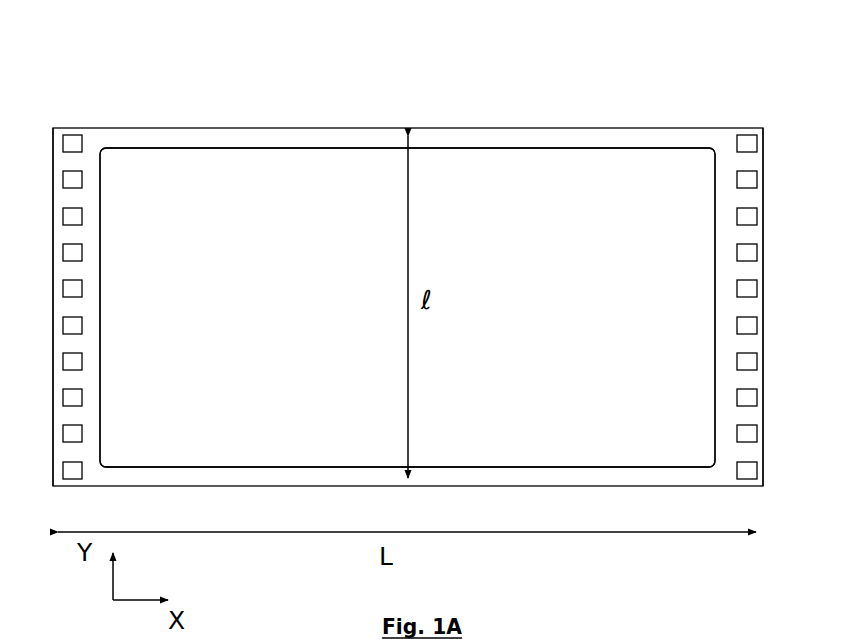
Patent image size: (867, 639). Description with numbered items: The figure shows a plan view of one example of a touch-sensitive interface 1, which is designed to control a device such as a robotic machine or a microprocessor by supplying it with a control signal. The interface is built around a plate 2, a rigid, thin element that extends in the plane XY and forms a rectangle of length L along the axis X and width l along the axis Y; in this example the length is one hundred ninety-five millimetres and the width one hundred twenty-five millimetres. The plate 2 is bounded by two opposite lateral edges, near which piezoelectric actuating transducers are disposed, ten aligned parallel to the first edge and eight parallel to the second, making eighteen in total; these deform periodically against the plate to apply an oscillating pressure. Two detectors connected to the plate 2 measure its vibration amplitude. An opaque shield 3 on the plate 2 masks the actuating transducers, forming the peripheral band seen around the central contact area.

The touch-sensitive interface 1 is at (248, 100).
The plate 2 is at (248, 162).
The opaque shield 3 is at (603, 135).